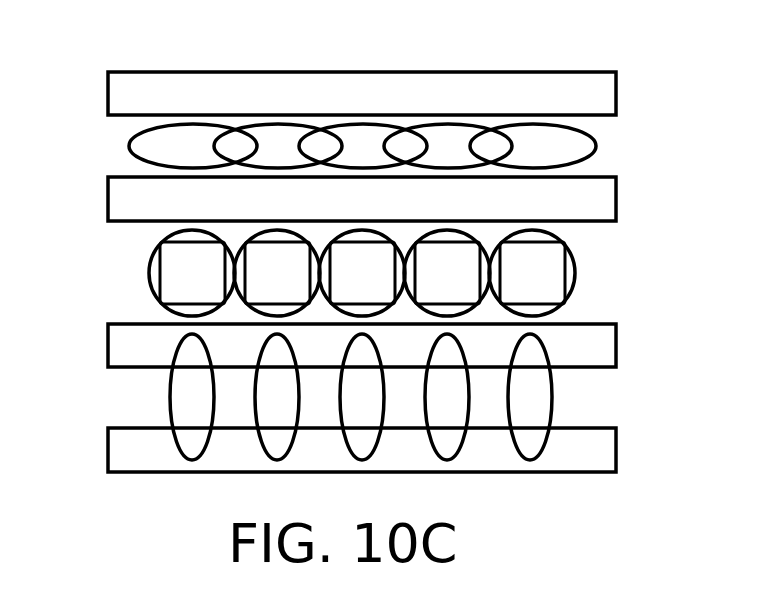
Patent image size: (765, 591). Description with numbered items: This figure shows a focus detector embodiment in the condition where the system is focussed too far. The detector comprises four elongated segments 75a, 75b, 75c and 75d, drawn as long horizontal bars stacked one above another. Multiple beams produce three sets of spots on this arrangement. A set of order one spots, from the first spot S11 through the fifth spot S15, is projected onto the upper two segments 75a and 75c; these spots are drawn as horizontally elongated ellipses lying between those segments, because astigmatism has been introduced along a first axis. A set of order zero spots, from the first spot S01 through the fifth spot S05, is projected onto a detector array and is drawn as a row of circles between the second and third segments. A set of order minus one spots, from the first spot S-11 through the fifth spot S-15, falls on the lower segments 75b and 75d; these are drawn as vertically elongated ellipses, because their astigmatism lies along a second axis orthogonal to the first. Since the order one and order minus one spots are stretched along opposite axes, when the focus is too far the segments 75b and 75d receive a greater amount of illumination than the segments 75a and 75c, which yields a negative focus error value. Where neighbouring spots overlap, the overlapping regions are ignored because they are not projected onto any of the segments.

The elongated segment 75a is at (255, 93).
The elongated segment 75b is at (593, 347).
The elongated segment 75c is at (593, 199).
The elongated segment 75d is at (140, 460).
The order 1 spot S11 is at (172, 146).
The order 1 spot S15 is at (552, 142).
The order 0 spot S01 is at (155, 272).
The order 0 spot S05 is at (570, 272).
The order -1 spot S-11 is at (185, 387).
The order -1 spot S-15 is at (535, 387).